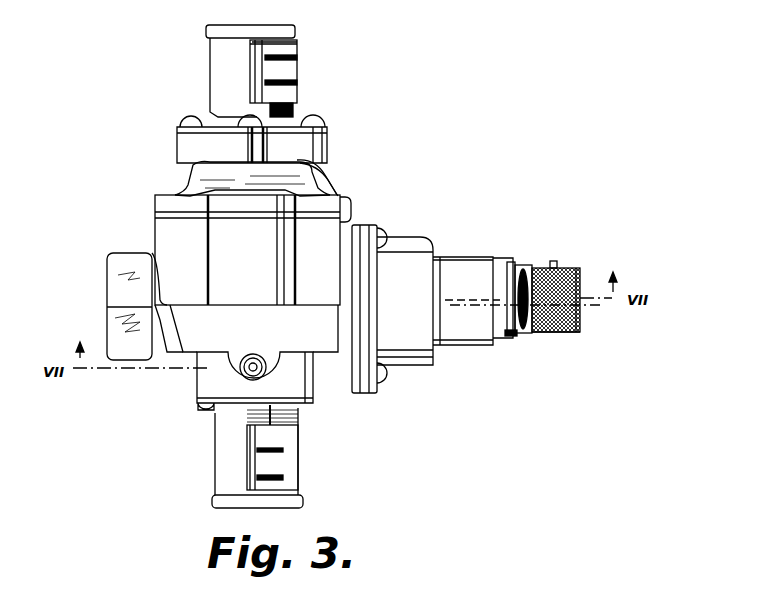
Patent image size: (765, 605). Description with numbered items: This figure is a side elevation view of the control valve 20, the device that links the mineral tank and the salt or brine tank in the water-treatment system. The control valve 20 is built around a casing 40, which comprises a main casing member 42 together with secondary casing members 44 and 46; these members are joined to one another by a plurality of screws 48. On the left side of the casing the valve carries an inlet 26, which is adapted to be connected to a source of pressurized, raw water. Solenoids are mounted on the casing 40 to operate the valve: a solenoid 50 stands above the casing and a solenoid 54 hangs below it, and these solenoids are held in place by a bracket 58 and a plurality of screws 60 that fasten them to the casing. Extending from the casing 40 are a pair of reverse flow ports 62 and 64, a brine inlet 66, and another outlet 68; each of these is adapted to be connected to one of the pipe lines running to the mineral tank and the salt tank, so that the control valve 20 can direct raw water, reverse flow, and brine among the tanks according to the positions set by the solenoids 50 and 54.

The control valve 20 is at (370, 394).
The inlet 26 is at (110, 273).
The casing 40 is at (354, 206).
The main casing member 42 is at (340, 263).
The secondary casing member 44 is at (212, 173).
The secondary casing member 46 is at (345, 303).
The screws 48 is at (335, 176).
The solenoid 50 is at (210, 70).
The solenoid 54 is at (215, 455).
The bracket 58 is at (197, 405).
The screws 60 is at (316, 122).
The reverse flow port 62 is at (556, 263).
The reverse flow port 64 is at (510, 262).
The brine inlet 66 is at (580, 322).
The outlet 68 is at (257, 362).